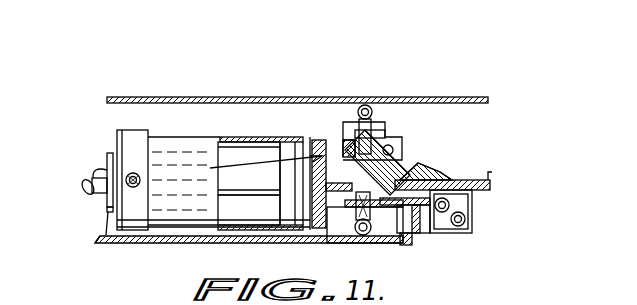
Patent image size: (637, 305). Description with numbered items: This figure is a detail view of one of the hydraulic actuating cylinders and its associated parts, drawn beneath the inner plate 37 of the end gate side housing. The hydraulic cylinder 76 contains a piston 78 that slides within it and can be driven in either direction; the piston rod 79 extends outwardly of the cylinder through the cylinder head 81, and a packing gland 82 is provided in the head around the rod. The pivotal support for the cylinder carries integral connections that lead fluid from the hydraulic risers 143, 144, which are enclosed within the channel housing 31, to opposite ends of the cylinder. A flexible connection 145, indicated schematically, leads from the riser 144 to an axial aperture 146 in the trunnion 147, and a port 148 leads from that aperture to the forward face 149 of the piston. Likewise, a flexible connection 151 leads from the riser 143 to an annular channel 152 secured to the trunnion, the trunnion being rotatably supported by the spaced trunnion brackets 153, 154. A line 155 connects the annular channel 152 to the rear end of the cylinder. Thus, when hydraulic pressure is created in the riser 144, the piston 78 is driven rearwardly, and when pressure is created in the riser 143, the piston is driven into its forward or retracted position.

The inner plate 37 is at (196, 97).
The hydraulic cylinder 76 is at (177, 222).
The cylinder head 81 is at (128, 136).
The packing gland 82 is at (107, 158).
The piston rod 79 is at (95, 195).
The line 155 is at (165, 178).
The trunnion bracket 154 is at (310, 122).
The port 148 is at (320, 183).
The piston 78 is at (292, 205).
The forward face of the piston 149 is at (292, 212).
The axial aperture 146 is at (338, 213).
The trunnion bracket 153 is at (352, 228).
The trunnion 147 is at (433, 168).
The annular channel 152 is at (347, 150).
The flexible connection 151 is at (400, 130).
The flexible connection 145 is at (450, 170).
The channel housing 31 is at (475, 210).
The hydraulic riser 144 is at (473, 233).
The hydraulic riser 143 is at (437, 236).